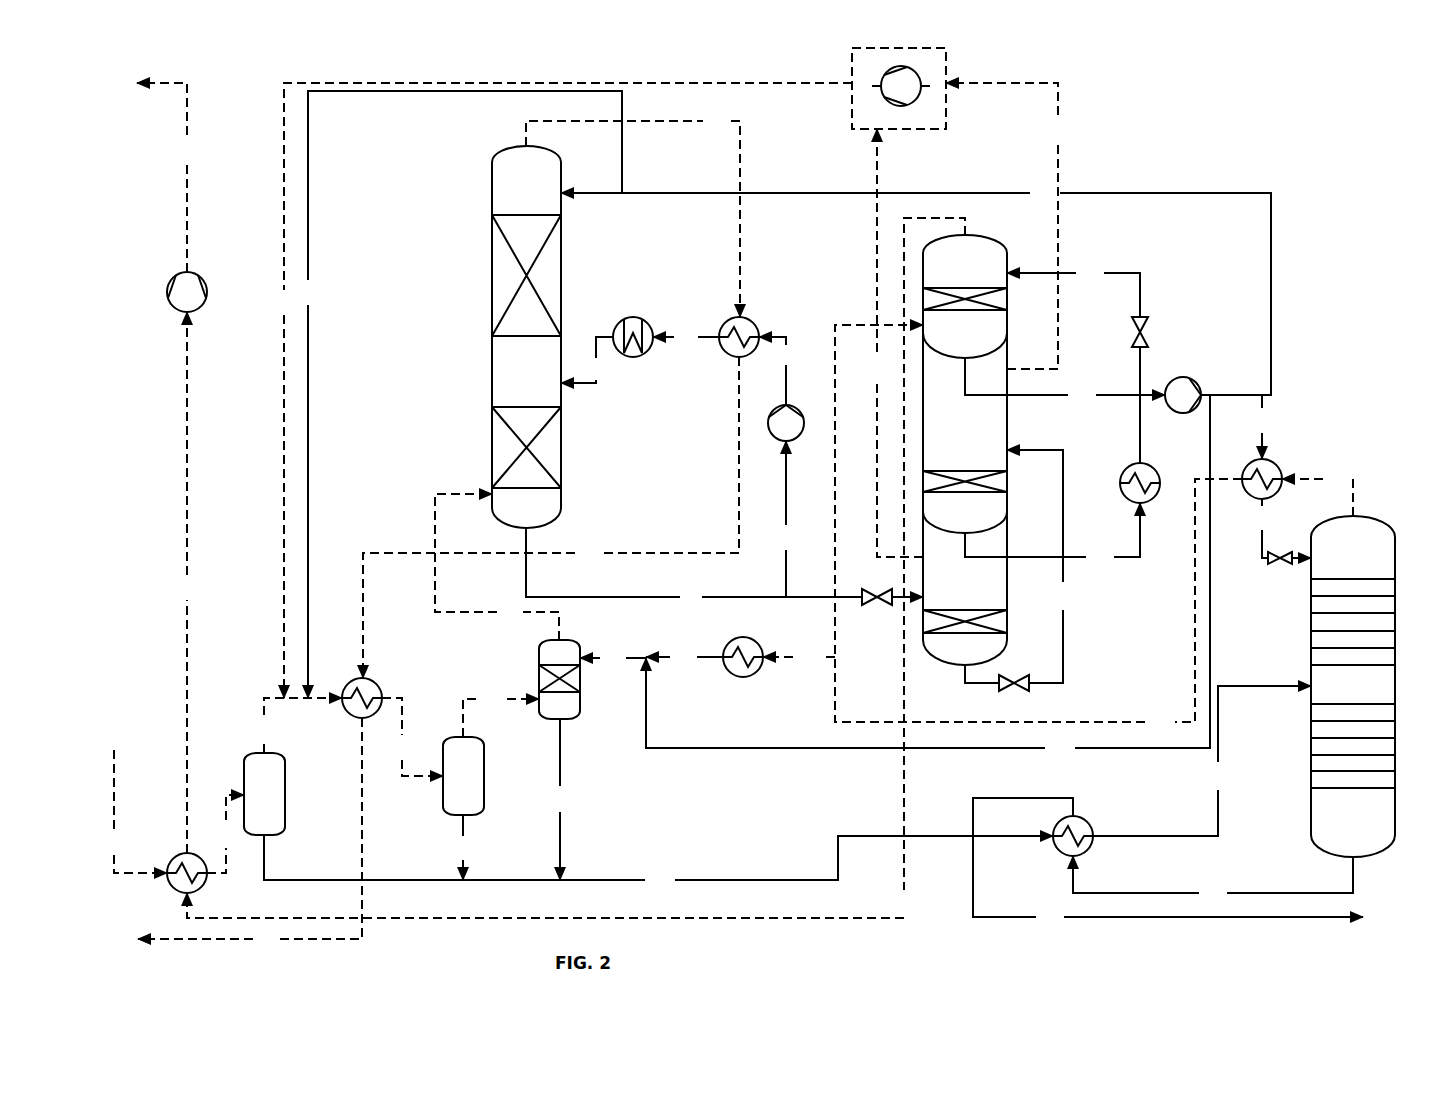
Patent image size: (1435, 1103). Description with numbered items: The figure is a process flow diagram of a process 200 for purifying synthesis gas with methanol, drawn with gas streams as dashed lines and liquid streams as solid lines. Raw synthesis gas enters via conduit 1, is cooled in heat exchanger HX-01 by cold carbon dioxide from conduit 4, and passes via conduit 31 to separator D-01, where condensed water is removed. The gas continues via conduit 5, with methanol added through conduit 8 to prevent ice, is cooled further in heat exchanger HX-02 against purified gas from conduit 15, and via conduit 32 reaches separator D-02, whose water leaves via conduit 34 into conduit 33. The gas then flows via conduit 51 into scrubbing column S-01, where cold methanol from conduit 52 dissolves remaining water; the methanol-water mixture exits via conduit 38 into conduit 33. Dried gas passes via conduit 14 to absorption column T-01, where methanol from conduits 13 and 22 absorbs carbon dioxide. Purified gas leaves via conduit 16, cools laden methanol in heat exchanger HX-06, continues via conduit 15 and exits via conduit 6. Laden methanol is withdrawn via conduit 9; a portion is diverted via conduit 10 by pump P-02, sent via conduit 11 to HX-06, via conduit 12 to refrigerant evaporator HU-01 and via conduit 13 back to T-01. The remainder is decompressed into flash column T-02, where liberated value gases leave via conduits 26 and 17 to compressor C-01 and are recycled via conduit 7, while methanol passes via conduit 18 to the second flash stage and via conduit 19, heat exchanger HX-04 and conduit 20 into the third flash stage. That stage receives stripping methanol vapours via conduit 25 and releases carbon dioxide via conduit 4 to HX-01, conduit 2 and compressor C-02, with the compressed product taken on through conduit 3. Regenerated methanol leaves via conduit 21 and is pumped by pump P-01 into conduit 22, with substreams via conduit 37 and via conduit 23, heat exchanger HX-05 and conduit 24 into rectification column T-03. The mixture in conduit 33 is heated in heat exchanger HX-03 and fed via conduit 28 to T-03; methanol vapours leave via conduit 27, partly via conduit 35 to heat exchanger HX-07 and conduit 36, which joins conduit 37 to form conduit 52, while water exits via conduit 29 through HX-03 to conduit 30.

The process 200 is at (1343, 80).
The conduit 1 is at (138, 811).
The conduit 2 is at (187, 582).
The conduit 3 is at (164, 177).
The conduit 4 is at (576, 568).
The conduit 5 is at (300, 725).
The conduit 6 is at (250, 833).
The conduit 7 is at (565, 390).
The conduit 8 is at (462, 394).
The conduit 9 is at (724, 567).
The conduit 10 is at (786, 519).
The conduit 11 is at (778, 371).
The conduit 12 is at (686, 337).
The conduit 13 is at (587, 360).
The conduit 14 is at (497, 567).
The conduit 15 is at (551, 517).
The conduit 16 is at (633, 214).
The conduit 17 is at (1007, 226).
The conduit 18 is at (1019, 570).
The conduit 19 is at (1052, 535).
The conduit 20 is at (1077, 363).
The conduit 21 is at (1065, 381).
The conduit 22 is at (916, 289).
The conduit 23 is at (1262, 427).
The conduit 24 is at (1281, 531).
The conduit 25 is at (1038, 528).
The conduit 26 is at (894, 343).
The conduit 27 is at (1317, 492).
The conduit 28 is at (1202, 761).
The conduit 29 is at (1213, 879).
The conduit 30 is at (1168, 862).
The conduit 31 is at (225, 834).
The conduit 32 is at (412, 737).
The conduit 33 is at (658, 862).
The conduit 34 is at (463, 847).
The conduit 35 is at (799, 657).
The conduit 36 is at (684, 657).
The conduit 37 is at (928, 576).
The conduit 38 is at (560, 799).
The conduit 51 is at (501, 713).
The conduit 52 is at (613, 658).
The absorption column T-01 is at (491, 192).
The flash column T-02 is at (998, 244).
The rectification column T-03 is at (1385, 520).
The scrubbing column S-01 is at (581, 700).
The separator D-01 is at (286, 795).
The separator D-02 is at (485, 776).
The heat exchanger HX-01 is at (172, 859).
The heat exchanger HX-02 is at (378, 684).
The heat exchanger HX-03 is at (1087, 823).
The heat exchanger HX-04 is at (1125, 469).
The heat exchanger HX-05 is at (1279, 464).
The heat exchanger HX-06 is at (752, 321).
The heat exchanger HX-07 is at (743, 678).
The refrigerant evaporator HU-01 is at (634, 317).
The pump P-01 is at (1190, 378).
The pump P-02 is at (803, 437).
The compressor C-01 is at (905, 131).
The compressor C-02 is at (207, 290).